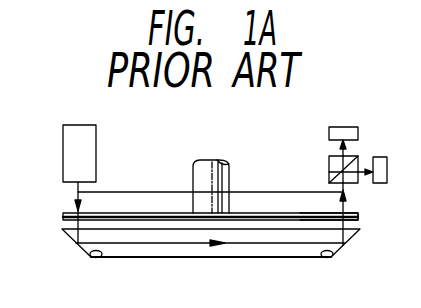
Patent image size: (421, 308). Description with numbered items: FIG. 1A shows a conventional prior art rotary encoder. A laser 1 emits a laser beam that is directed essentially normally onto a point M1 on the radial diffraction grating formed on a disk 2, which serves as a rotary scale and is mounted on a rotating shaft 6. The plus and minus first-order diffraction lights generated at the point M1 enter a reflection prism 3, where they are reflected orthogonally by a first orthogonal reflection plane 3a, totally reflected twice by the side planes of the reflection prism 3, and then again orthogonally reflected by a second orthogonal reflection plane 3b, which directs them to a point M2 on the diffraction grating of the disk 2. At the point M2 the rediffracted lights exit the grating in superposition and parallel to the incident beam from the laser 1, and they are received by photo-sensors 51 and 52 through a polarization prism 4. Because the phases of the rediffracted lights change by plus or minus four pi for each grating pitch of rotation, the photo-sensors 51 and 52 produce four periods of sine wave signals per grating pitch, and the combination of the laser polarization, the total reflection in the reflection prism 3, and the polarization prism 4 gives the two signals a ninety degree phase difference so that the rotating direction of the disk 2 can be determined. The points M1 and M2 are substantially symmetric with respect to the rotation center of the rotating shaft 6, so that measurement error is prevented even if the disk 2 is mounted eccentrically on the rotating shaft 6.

The laser 1 is at (96, 136).
The disk (rotary scale) 2 is at (360, 230).
The reflection prism 3 is at (143, 258).
The first orthogonal reflection plane 3a is at (97, 258).
The second orthogonal reflection plane 3b is at (324, 258).
The polarization prism 4 is at (329, 165).
The rotating shaft 6 is at (223, 178).
The photo-sensor 51 is at (340, 127).
The photo-sensor 52 is at (380, 157).
The point M1 is at (75, 210).
The point M2 is at (350, 212).